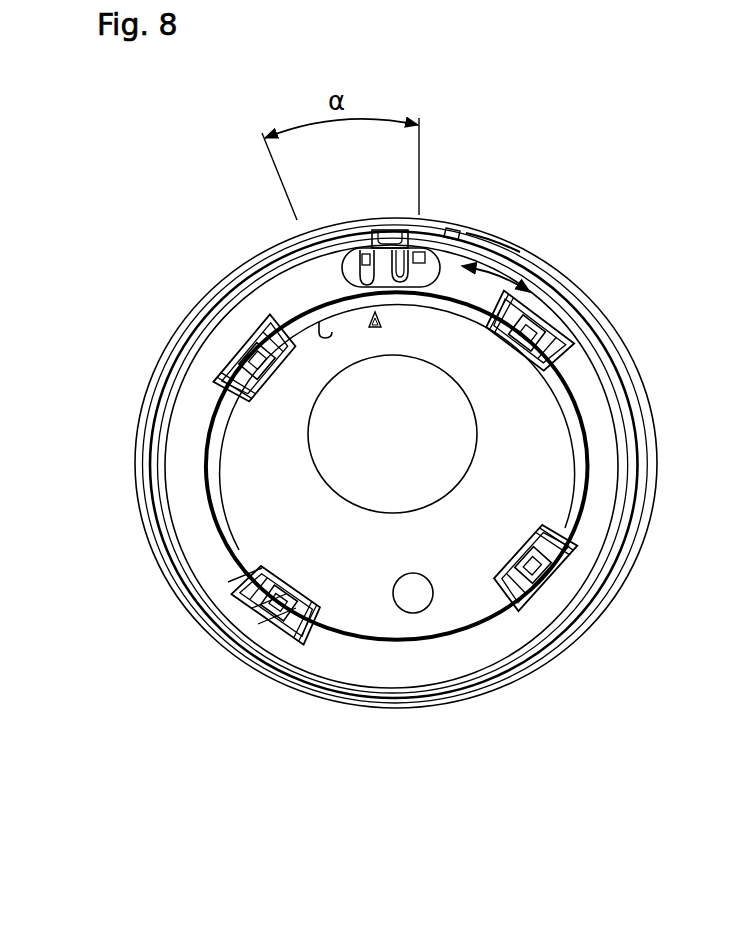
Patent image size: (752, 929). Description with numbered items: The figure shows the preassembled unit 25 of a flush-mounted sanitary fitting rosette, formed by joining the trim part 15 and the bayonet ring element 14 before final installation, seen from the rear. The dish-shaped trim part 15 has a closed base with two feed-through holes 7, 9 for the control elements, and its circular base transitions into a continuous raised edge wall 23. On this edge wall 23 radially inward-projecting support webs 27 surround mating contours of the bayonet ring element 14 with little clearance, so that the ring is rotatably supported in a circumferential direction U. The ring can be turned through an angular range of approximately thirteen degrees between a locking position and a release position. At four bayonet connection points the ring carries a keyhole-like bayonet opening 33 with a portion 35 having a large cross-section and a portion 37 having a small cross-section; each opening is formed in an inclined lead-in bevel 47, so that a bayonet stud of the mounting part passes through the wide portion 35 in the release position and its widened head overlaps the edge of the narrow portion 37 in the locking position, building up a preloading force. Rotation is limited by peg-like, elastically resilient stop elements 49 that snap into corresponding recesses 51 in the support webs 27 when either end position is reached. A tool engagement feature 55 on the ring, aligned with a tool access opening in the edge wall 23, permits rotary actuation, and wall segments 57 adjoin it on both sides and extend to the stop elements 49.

The feed-through hole 7 is at (416, 357).
The feed-through hole 9 is at (411, 614).
The bayonet ring element 14 is at (209, 355).
The trim part 15 is at (184, 317).
The edge wall 23 is at (234, 290).
The preassembled unit 25 is at (337, 428).
The support web 27 is at (263, 262).
The bayonet opening 33 is at (538, 326).
The portion having a large cross-section 35 is at (248, 584).
The portion having a small cross-section 37 is at (255, 612).
The lead-in bevel 47 is at (258, 626).
The stop element 49 is at (470, 233).
The recess 51 is at (458, 234).
The tool engagement feature 55 is at (375, 236).
The wall segment 57 is at (348, 229).
The circumferential direction U is at (500, 270).